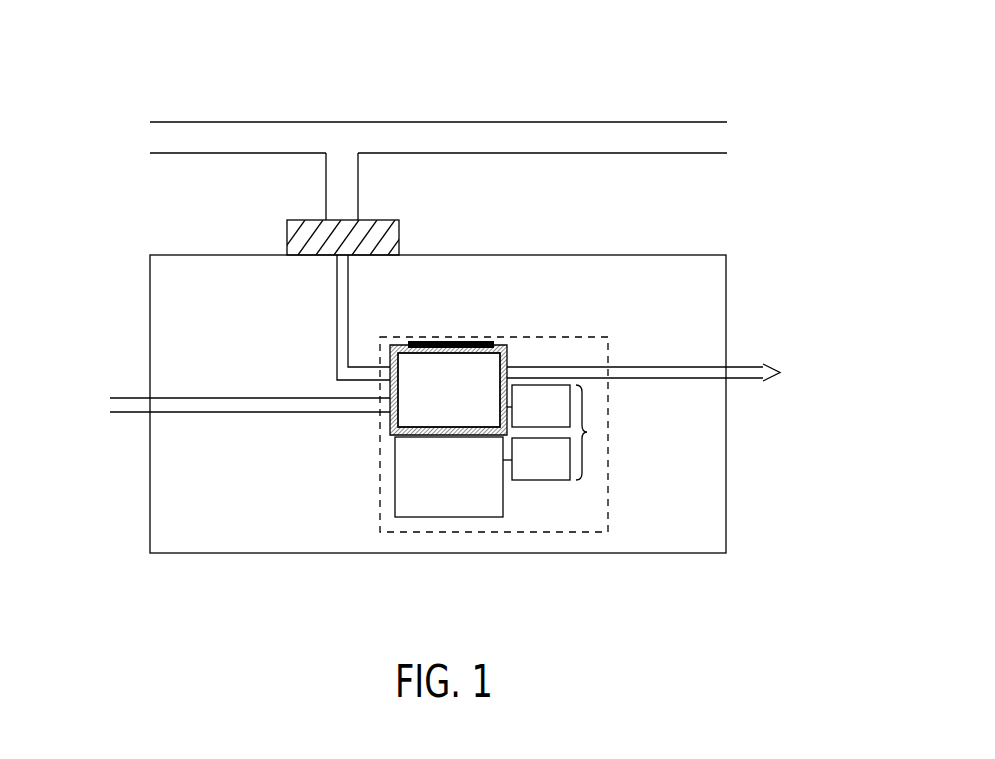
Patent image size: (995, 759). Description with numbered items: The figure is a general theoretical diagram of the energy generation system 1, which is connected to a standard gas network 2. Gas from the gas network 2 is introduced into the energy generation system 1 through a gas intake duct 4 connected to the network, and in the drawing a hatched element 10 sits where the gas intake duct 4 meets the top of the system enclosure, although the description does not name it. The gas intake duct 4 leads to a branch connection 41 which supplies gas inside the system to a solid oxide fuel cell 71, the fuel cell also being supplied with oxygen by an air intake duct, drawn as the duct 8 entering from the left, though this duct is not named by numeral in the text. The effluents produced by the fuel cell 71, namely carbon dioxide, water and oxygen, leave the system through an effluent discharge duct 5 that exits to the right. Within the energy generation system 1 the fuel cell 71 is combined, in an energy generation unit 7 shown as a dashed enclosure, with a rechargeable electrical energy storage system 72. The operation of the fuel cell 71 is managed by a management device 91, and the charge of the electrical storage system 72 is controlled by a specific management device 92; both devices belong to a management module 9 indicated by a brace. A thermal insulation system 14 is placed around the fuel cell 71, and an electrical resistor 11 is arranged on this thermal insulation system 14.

The energy generation system 1 is at (145, 90).
The gas network 2 is at (627, 135).
The gas intake duct 4 is at (338, 189).
The effluent discharge duct 5 is at (698, 375).
The energy generation unit 7 is at (560, 353).
The liquid inlet pipe 8 is at (180, 408).
The management module 9 is at (589, 432).
The connection member 10 is at (287, 240).
The electrical resistor 11 is at (455, 341).
The thermal insulation system 14 is at (498, 346).
The branch connection 41 is at (335, 325).
The solid oxide fuel cell 71 is at (461, 403).
The rechargeable electrical energy storage system 72 is at (461, 490).
The management device 91 is at (554, 419).
The specific management device 92 is at (554, 472).